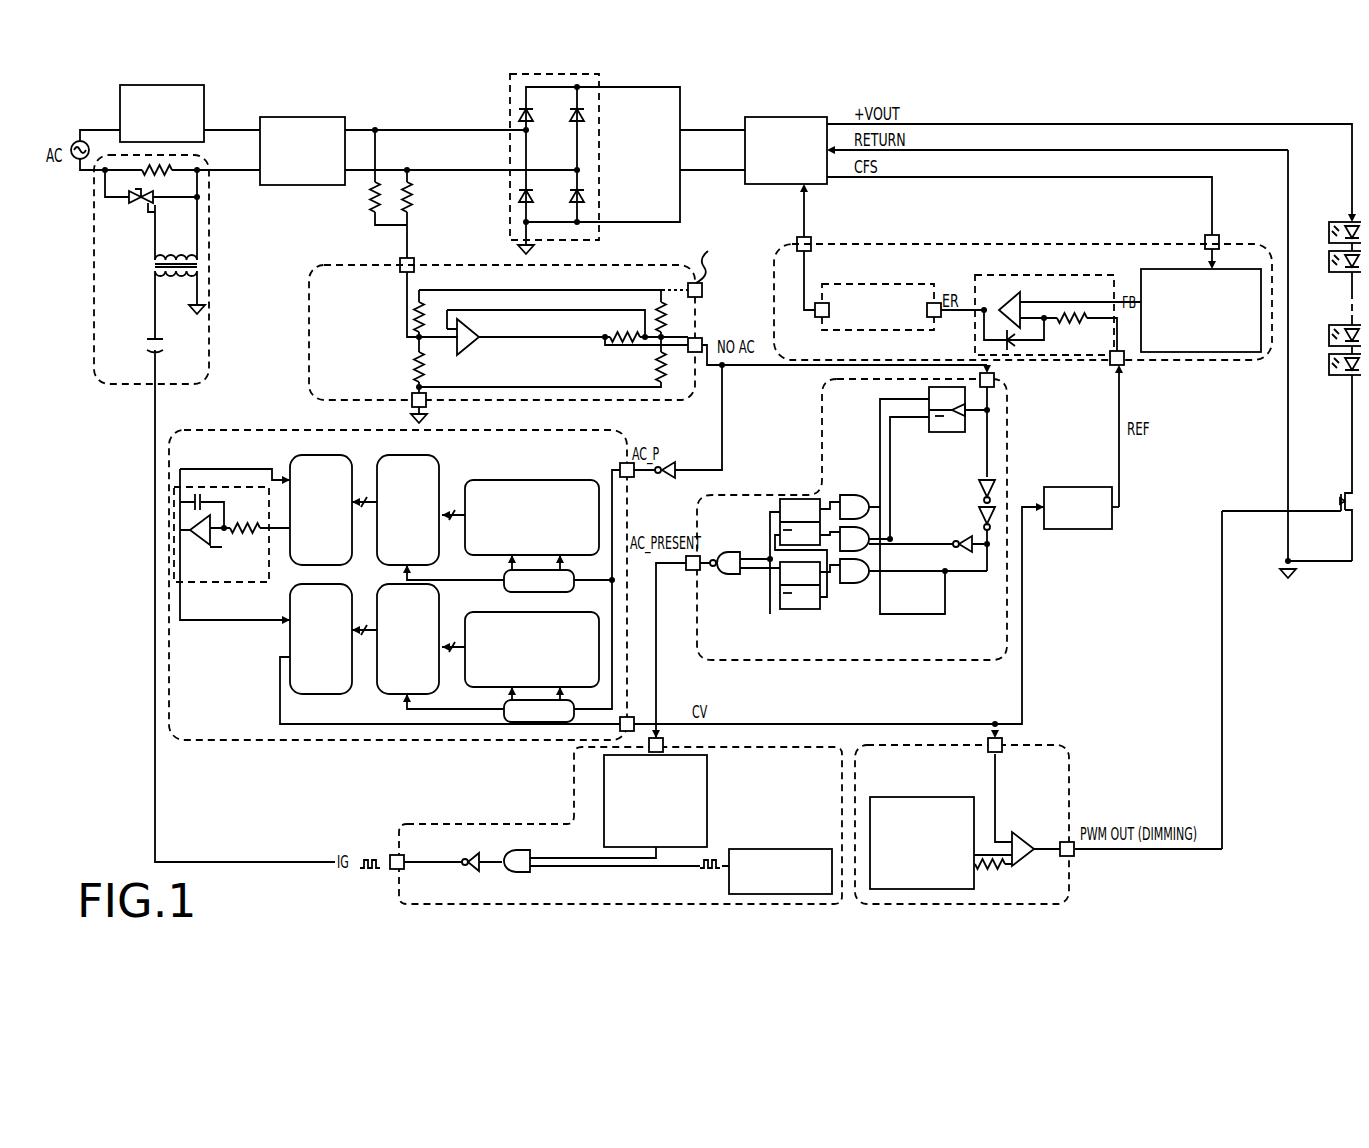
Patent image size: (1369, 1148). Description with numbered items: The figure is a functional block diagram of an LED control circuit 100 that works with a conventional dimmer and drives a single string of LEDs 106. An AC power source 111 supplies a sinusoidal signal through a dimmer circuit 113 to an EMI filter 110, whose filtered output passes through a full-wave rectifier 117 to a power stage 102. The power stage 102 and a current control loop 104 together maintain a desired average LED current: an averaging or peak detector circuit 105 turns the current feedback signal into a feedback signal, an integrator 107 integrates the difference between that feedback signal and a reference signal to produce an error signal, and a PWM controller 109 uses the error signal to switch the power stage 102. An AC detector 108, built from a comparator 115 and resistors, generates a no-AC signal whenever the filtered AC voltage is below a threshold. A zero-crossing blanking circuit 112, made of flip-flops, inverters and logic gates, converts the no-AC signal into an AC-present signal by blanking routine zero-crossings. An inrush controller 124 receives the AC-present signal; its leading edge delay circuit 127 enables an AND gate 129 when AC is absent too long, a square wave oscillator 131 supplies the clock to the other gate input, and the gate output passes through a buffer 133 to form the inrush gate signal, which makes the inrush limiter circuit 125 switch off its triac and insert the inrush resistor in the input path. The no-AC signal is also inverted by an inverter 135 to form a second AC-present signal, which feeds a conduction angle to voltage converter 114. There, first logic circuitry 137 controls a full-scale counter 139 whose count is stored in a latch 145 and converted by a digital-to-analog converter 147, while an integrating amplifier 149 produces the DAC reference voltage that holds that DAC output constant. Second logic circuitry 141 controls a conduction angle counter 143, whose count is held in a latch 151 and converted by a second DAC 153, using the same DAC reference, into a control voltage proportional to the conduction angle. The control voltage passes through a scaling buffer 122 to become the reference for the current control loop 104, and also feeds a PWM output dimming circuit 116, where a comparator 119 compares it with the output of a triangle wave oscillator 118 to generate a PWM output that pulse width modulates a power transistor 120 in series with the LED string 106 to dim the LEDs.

The LED control circuit 100 is at (1275, 688).
The power stage 102 is at (783, 115).
The current control loop 104 is at (1262, 241).
The averaging or peak detector circuit 105 is at (1196, 353).
The single string of LEDs 106 is at (1342, 301).
The integrator 107 is at (1103, 274).
The AC detector 108 is at (500, 328).
The PWM controller 109 is at (832, 330).
The EMI filter 110 is at (275, 115).
The AC power source 111 is at (75, 140).
The zero-crossing blanking circuit 112 is at (1008, 622).
The dimmer circuit 113 is at (203, 100).
The conduction angle to voltage converter 114 is at (370, 558).
The comparator 115 is at (471, 330).
The PWM output dimming circuit 116 is at (1038, 811).
The full-wave rectifier 117 is at (600, 78).
The triangle wave oscillator 118 is at (925, 796).
The comparator 119 is at (1016, 830).
The power transistor 120 is at (1340, 488).
The scaling buffer 122 is at (1075, 528).
The inrush controller 124 is at (616, 821).
The inrush limiter circuit 125 is at (92, 292).
The leading edge delay circuit 127 is at (706, 790).
The AND gate 129 is at (521, 848).
The squarewave oscillator 131 is at (800, 847).
The buffer 133 is at (462, 852).
The inverter 135 is at (667, 456).
The first logic circuitry 137 is at (502, 572).
The full-scale counter 139 is at (532, 517).
The second logic circuitry 141 is at (502, 702).
The conduction angle counter 143 is at (532, 649).
The latch 145 is at (375, 534).
The digital-to-analog converter 147 is at (290, 456).
The integrating amplifier 149 is at (172, 520).
The latch 151 is at (378, 690).
The second DAC 153 is at (288, 655).